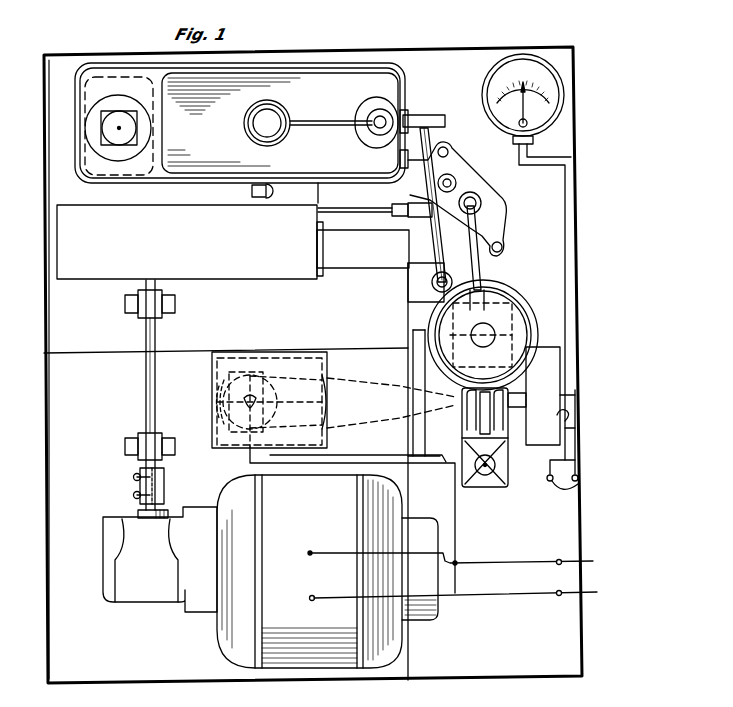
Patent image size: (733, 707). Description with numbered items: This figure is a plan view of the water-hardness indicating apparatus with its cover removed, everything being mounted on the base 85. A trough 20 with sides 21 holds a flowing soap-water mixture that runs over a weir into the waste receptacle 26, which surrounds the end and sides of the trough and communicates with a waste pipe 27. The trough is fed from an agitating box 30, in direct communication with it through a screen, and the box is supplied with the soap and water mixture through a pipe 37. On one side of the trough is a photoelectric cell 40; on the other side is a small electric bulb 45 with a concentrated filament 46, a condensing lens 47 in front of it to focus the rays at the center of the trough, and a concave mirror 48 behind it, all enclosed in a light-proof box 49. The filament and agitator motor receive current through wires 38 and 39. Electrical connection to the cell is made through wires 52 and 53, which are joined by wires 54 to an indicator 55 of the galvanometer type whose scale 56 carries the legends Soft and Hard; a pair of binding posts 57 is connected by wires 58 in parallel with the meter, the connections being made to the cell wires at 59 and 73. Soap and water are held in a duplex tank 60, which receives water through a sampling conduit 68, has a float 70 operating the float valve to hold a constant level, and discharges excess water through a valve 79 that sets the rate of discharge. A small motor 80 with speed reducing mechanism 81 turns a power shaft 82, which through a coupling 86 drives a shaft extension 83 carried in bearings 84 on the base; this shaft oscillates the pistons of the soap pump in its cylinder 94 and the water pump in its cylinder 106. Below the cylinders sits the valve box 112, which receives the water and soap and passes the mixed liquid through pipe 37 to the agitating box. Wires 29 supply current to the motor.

The trough 20 is at (502, 442).
The sides 21 is at (490, 415).
The waste receptacle 26 is at (452, 412).
The waste pipe 27 is at (488, 476).
The wires 29 is at (322, 556).
The agitating box 30 is at (490, 335).
The pipe 37 is at (481, 283).
The wire 38 is at (350, 455).
The wire 39 is at (452, 432).
The photoelectric cell 40 is at (543, 396).
The electric bulb 45 is at (256, 376).
The filament 46 is at (258, 396).
The condensing lens 47 is at (326, 401).
The concave mirror 48 is at (217, 403).
The light-proof box 49 is at (328, 360).
The wire 52 is at (568, 388).
The wire 53 is at (578, 428).
The wires 54 is at (575, 274).
The indicator 55 is at (546, 111).
The scale 56 is at (545, 92).
The binding posts 57 is at (578, 488).
The wires 58 is at (580, 458).
The connection 59 is at (578, 393).
The duplex tank 60 is at (398, 80).
The sampling conduit 68 is at (425, 118).
The float 70 is at (318, 123).
The connection 73 is at (569, 410).
The valve 79 is at (250, 191).
The motor 80 is at (322, 668).
The speed reducing mechanism 81 is at (155, 598).
The power shaft 82 is at (138, 513).
The shaft extension 83 is at (146, 390).
The bearings 84 is at (140, 306).
The base 85 is at (52, 650).
The coupling 86 is at (165, 490).
The cylinder 94 is at (404, 204).
The cylinder 106 is at (362, 262).
The valve box 112 is at (505, 205).